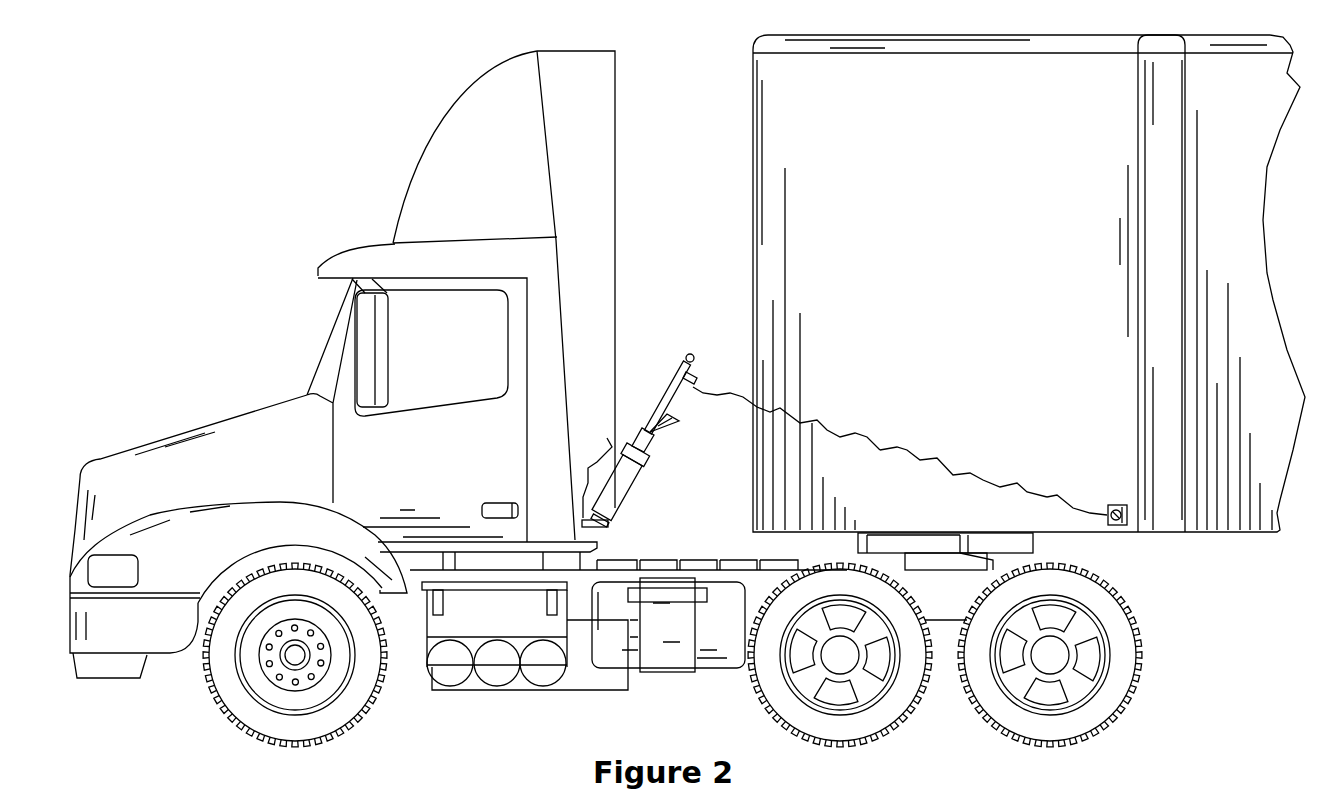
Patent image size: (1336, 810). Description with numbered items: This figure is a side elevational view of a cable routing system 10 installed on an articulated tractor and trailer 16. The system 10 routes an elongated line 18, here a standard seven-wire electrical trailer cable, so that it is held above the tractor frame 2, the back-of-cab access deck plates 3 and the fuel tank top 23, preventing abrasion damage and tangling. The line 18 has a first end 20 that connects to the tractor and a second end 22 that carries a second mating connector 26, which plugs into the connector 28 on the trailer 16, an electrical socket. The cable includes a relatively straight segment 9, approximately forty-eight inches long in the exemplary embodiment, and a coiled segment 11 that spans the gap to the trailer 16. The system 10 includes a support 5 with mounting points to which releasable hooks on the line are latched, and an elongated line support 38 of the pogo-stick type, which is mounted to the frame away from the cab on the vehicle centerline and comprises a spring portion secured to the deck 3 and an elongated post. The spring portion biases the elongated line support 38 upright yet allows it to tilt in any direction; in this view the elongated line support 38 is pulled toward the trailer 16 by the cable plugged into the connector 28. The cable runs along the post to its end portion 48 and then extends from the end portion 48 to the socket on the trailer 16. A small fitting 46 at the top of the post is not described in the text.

The frame 2 is at (937, 600).
The deck 3 is at (672, 562).
The support 5 is at (654, 413).
The relatively straight segment 9 is at (647, 425).
The system 10 is at (681, 298).
The coiled segment 11 is at (907, 445).
The trailer 16 is at (922, 92).
The elongated line 18 is at (823, 420).
The first end 20 is at (617, 493).
The second end 22 is at (1077, 512).
The fuel tank top 23 is at (713, 578).
The second mating connector 26 is at (1117, 527).
The connector 28 is at (1120, 507).
The elongated line support 38 is at (677, 377).
The pivot fitting 46 is at (689, 355).
The end portion 48 is at (683, 367).